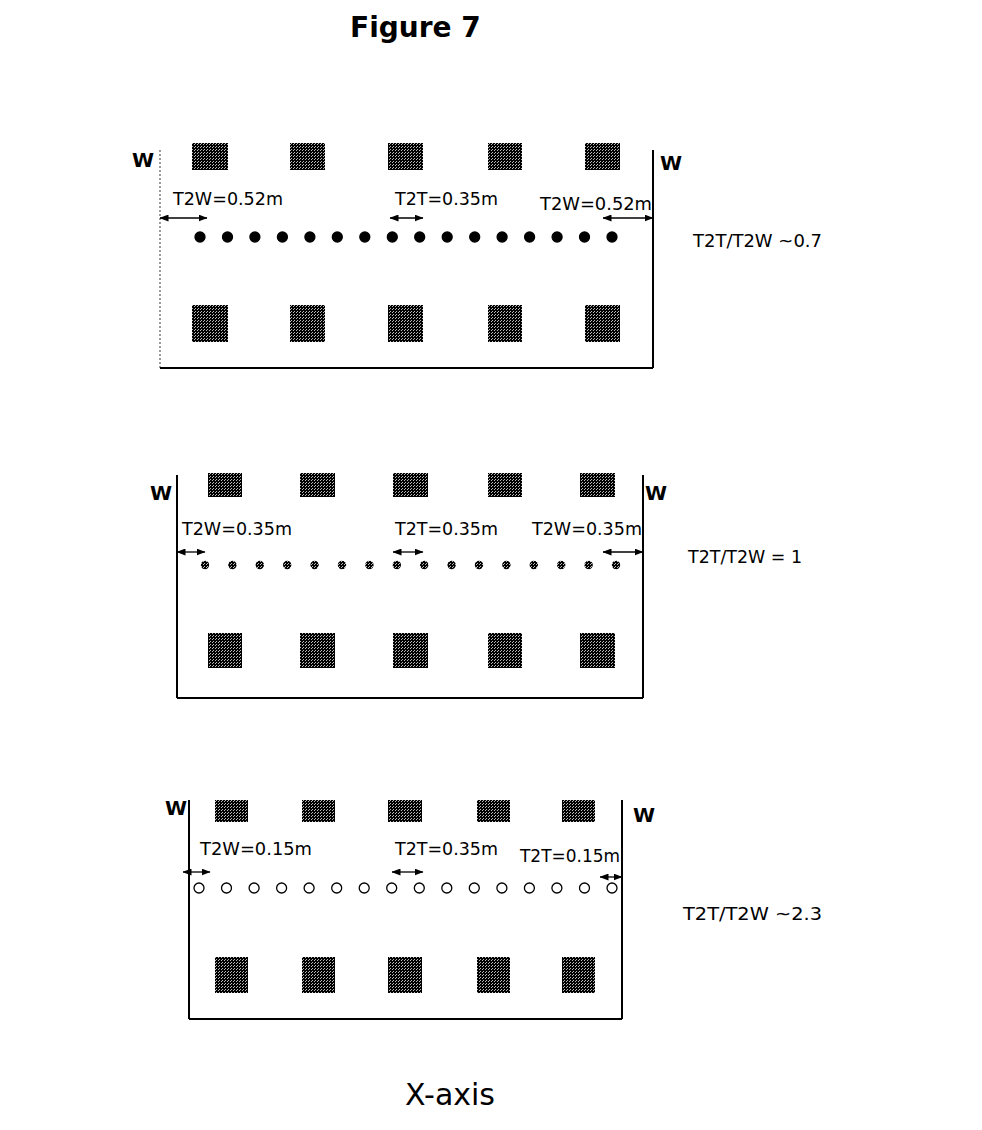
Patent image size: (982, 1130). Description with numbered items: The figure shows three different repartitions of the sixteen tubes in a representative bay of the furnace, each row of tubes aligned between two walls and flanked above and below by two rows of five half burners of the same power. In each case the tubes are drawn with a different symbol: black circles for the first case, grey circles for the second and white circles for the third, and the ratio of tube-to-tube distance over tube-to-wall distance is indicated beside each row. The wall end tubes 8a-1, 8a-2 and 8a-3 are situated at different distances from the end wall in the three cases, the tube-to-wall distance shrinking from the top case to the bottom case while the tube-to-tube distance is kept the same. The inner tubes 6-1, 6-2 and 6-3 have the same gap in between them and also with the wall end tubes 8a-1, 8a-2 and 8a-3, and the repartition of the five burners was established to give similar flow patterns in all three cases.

The inner tubes 6-1 is at (392, 245).
The inner tubes 6-2 is at (388, 572).
The inner tubes 6-3 is at (392, 895).
The wall end tubes 8a-1 is at (188, 235).
The wall end tubes 8a-2 is at (193, 562).
The wall end tubes 8a-3 is at (193, 888).